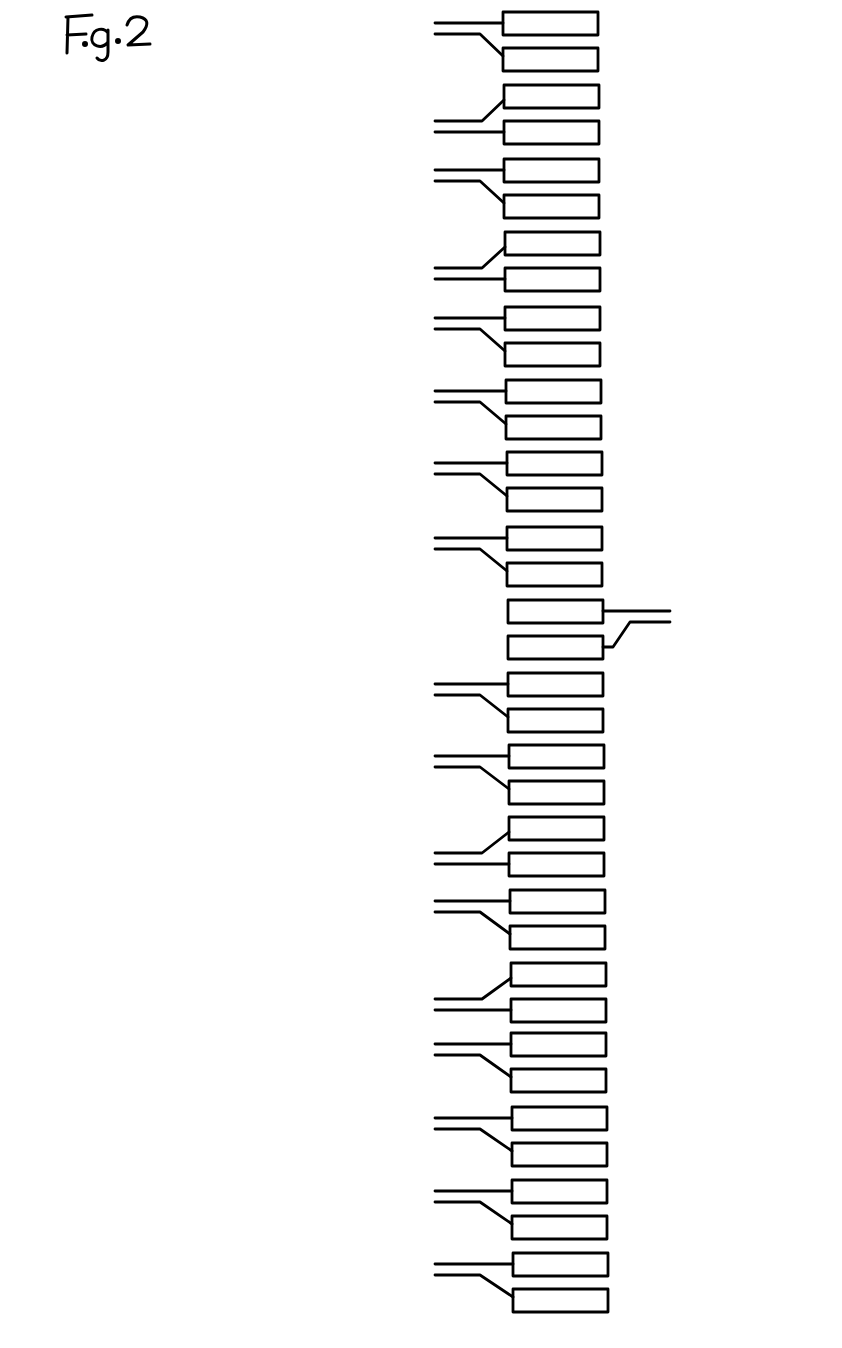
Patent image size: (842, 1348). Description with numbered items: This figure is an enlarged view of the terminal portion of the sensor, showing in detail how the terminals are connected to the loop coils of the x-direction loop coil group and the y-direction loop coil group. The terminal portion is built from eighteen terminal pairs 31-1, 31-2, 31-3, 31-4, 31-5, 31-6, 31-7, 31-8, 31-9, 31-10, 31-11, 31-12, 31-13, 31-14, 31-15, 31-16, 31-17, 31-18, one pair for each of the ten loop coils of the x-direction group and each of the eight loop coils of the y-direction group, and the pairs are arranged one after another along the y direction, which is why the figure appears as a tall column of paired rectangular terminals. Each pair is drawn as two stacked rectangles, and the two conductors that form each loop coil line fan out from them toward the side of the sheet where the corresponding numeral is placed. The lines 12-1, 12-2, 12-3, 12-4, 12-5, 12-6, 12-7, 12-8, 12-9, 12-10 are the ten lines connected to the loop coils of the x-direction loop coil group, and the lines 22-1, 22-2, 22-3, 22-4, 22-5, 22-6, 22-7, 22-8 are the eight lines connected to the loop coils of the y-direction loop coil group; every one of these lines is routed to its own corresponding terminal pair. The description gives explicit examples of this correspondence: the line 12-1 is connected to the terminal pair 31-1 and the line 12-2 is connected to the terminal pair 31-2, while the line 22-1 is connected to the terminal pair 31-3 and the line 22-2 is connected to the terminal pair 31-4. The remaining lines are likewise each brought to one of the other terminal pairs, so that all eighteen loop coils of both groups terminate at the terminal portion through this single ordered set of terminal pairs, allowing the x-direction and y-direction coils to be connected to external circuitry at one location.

The line 12-1 is at (429, 28).
The line 12-2 is at (429, 126).
The line 12-3 is at (429, 1269).
The line 12-4 is at (429, 1196).
The line 12-5 is at (429, 323).
The line 12-6 is at (429, 396).
The line 12-7 is at (429, 1004).
The line 12-8 is at (429, 906).
The line 12-9 is at (429, 689).
The line 12-10 is at (678, 617).
The line 22-1 is at (429, 175).
The line 22-2 is at (429, 273).
The line 22-3 is at (429, 543).
The line 22-4 is at (429, 858).
The line 22-5 is at (429, 468).
The line 22-6 is at (429, 761).
The line 22-7 is at (429, 1049).
The line 22-8 is at (429, 1123).
The terminal pair 31-1 is at (598, 59).
The terminal pair 31-2 is at (599, 132).
The terminal pair 31-3 is at (599, 206).
The terminal pair 31-4 is at (600, 279).
The terminal pair 31-5 is at (600, 354).
The terminal pair 31-6 is at (601, 427).
The terminal pair 31-7 is at (602, 499).
The terminal pair 31-8 is at (602, 574).
The terminal pair 31-9 is at (508, 647).
The terminal pair 31-10 is at (603, 720).
The terminal pair 31-11 is at (604, 792).
The terminal pair 31-12 is at (604, 864).
The terminal pair 31-13 is at (605, 937).
The terminal pair 31-14 is at (606, 1010).
The terminal pair 31-15 is at (606, 1080).
The terminal pair 31-16 is at (607, 1154).
The terminal pair 31-17 is at (607, 1227).
The terminal pair 31-18 is at (608, 1300).